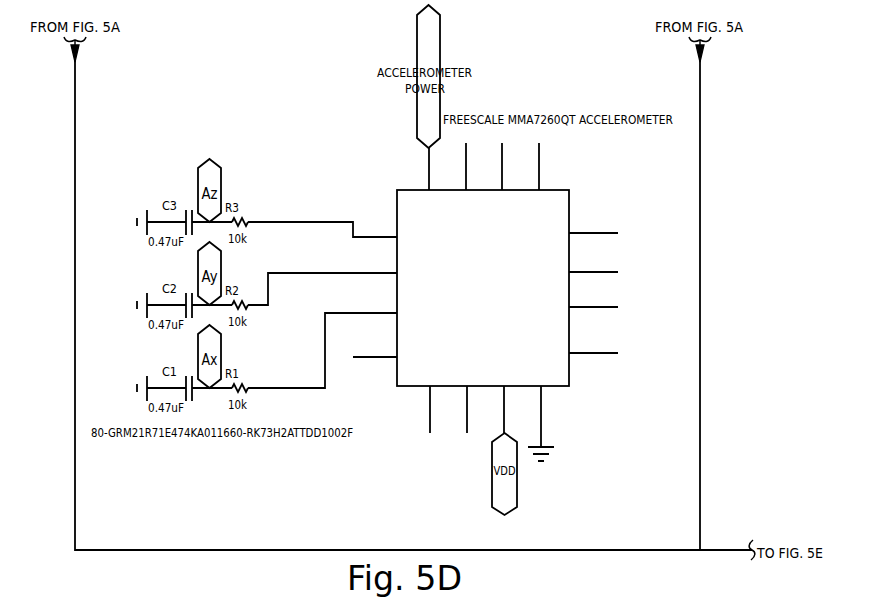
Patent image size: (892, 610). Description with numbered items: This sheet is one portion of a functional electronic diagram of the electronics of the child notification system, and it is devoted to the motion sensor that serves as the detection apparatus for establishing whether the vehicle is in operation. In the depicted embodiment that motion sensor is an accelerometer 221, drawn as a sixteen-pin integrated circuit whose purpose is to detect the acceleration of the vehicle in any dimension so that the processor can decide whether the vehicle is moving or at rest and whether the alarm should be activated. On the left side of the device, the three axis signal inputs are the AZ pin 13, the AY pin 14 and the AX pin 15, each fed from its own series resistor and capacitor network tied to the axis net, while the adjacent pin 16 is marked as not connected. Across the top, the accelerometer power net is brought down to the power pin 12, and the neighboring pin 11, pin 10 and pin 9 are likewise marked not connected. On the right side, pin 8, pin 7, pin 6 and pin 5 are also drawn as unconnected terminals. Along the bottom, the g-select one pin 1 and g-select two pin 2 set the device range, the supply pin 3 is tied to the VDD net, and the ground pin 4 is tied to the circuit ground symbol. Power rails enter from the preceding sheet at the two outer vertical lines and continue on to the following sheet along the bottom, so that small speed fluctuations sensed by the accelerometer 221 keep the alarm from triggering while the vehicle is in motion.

The accelerometer 221 is at (589, 403).
The AZ input pin 13 is at (322, 228).
The AY input pin 14 is at (322, 280).
The AX input pin 15 is at (322, 342).
The NC pin 16 is at (375, 348).
The power pin 12 is at (419, 169).
The NC pin 11 is at (458, 166).
The NC pin 10 is at (494, 166).
The NC pin 9 is at (533, 166).
The NC pin 8 is at (593, 224).
The NC pin 7 is at (593, 262).
The NC pin 6 is at (593, 297).
The NC pin 5 is at (593, 343).
The GSELECT1 pin 1 is at (424, 409).
The GSELECT2 pin 2 is at (461, 409).
The VDD pin 3 is at (498, 409).
The VSS pin 4 is at (535, 416).